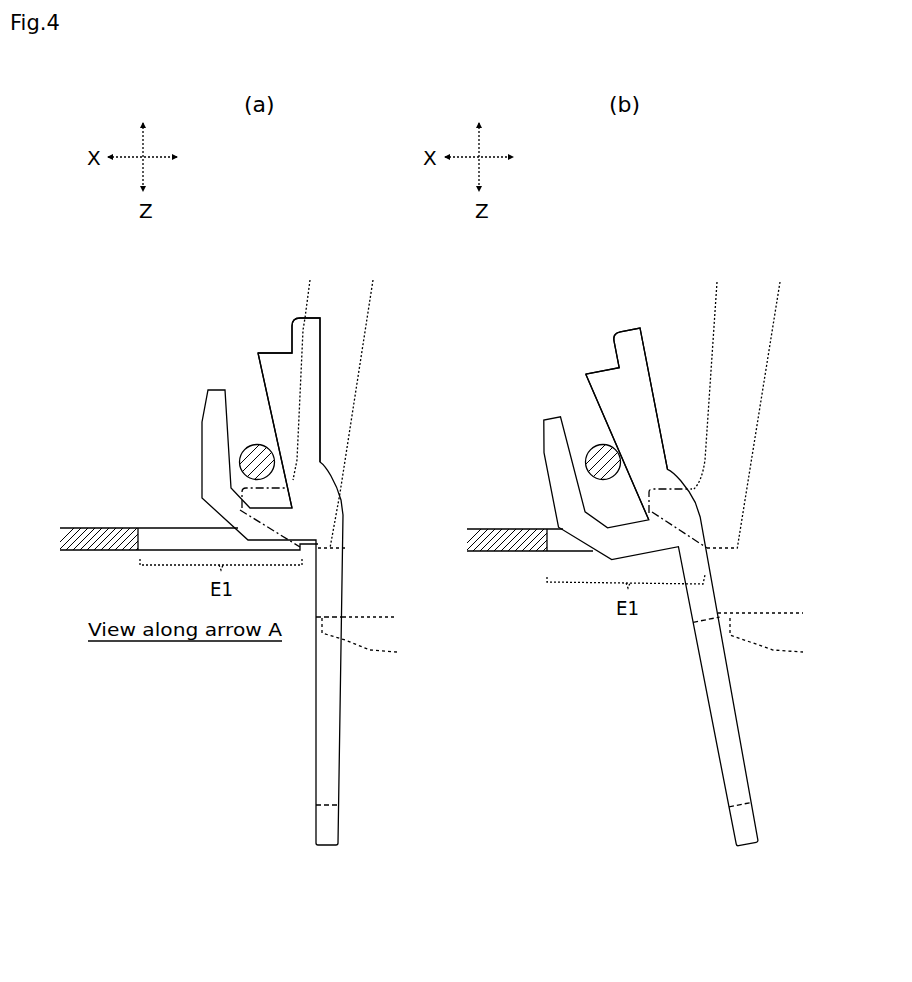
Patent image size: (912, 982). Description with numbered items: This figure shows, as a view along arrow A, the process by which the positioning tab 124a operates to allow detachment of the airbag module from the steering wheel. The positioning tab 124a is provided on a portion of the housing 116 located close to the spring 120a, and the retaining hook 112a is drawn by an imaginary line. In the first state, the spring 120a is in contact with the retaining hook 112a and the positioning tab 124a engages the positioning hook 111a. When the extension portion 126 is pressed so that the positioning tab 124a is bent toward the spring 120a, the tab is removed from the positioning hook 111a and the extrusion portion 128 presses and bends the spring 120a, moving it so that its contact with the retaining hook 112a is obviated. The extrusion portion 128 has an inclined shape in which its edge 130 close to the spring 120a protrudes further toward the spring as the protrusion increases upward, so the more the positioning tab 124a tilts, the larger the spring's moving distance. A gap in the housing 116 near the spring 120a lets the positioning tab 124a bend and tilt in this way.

The positioning tab 124a is at (240, 288).
The extension portion 126 is at (303, 312).
The extrusion portion 128 is at (272, 352).
The edge 130 is at (258, 385).
The spring 120a is at (250, 460).
The housing 116 is at (100, 528).
The retaining hook 112a is at (368, 320).
The positioning hook 111a is at (378, 613).